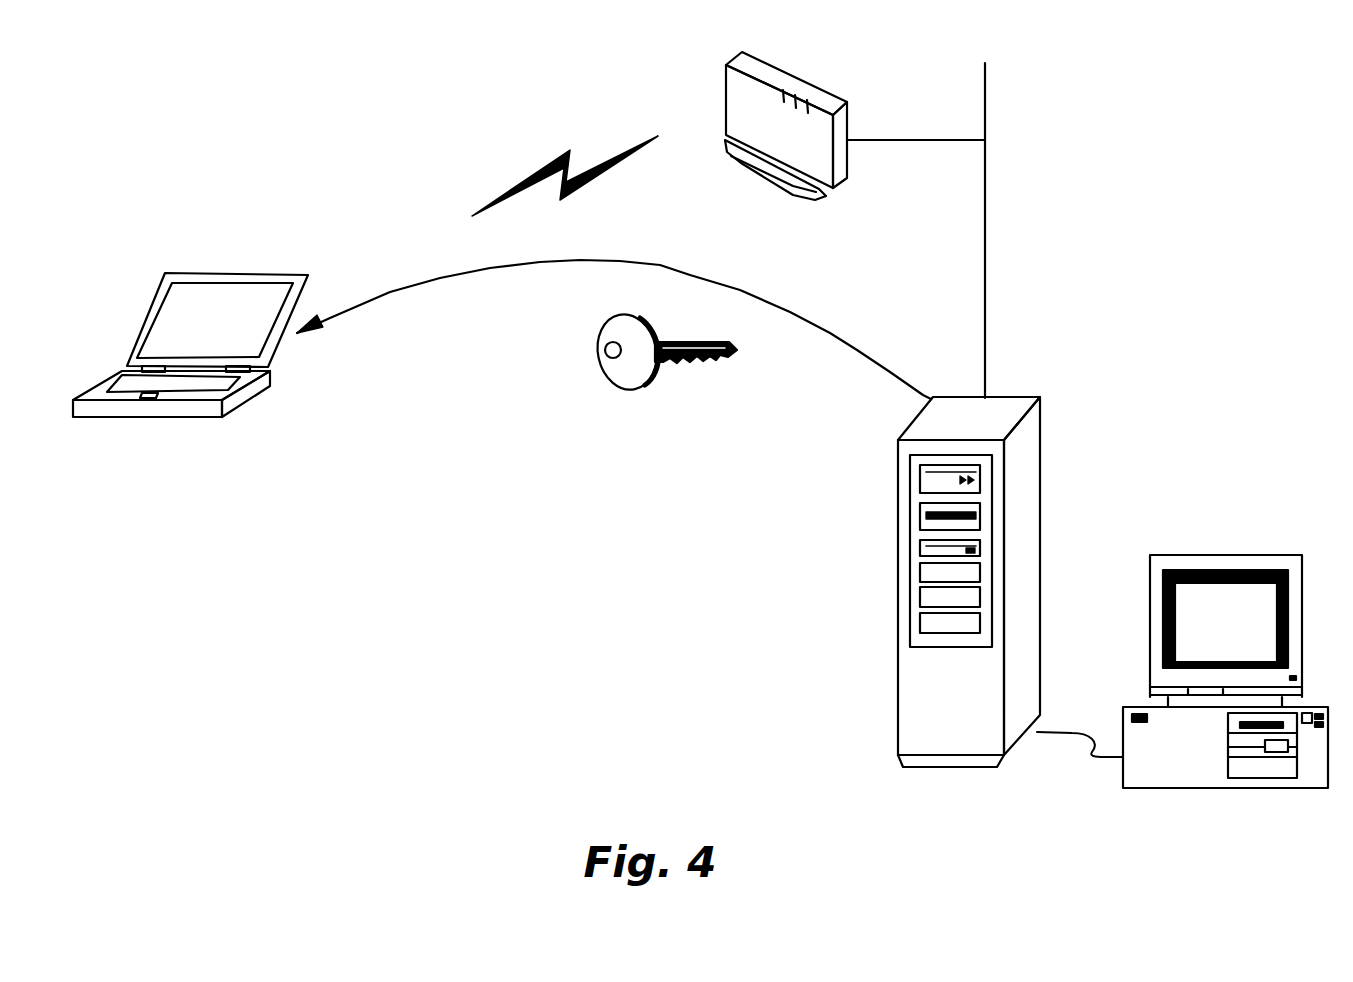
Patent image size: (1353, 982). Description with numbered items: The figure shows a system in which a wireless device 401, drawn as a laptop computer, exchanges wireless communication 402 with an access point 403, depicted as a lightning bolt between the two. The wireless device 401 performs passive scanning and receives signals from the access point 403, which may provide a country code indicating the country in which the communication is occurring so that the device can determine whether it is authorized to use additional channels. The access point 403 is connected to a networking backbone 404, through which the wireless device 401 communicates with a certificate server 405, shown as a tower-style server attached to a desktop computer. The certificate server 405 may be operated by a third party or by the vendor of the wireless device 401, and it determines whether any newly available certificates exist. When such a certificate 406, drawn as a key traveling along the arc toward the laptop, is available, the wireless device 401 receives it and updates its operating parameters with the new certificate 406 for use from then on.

The wireless device 401 is at (164, 445).
The wireless communication 402 is at (589, 240).
The access point 403 is at (797, 262).
The networking backbone 404 is at (985, 213).
The certificate server 405 is at (898, 505).
The certificate 406 is at (686, 427).